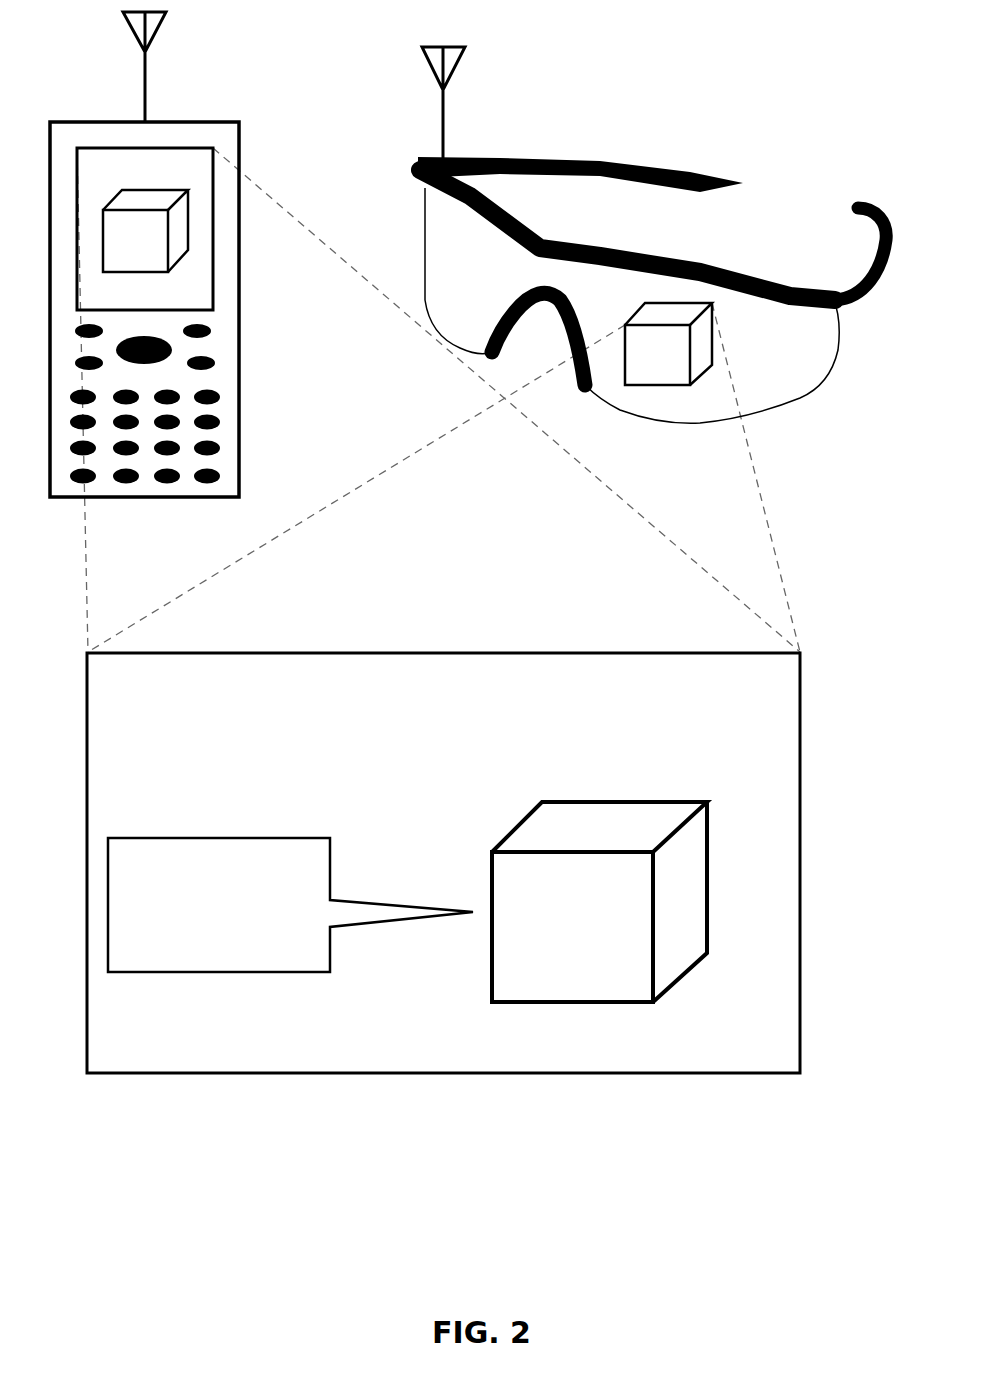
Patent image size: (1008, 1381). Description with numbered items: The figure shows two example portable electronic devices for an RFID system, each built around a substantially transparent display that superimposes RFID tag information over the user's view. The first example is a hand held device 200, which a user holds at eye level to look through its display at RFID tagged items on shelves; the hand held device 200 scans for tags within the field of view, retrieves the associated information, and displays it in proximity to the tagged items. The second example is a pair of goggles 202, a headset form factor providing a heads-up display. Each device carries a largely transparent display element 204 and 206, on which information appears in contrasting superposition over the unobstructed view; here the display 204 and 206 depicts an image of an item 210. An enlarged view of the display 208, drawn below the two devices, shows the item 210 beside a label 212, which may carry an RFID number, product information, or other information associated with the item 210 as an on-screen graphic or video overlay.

The hand held device 200 is at (197, 122).
The pair of goggles 202 is at (683, 173).
The display element 204 is at (195, 243).
The display element 206 is at (698, 343).
The display 208 is at (434, 600).
The item 210 is at (598, 963).
The label 212 is at (303, 838).